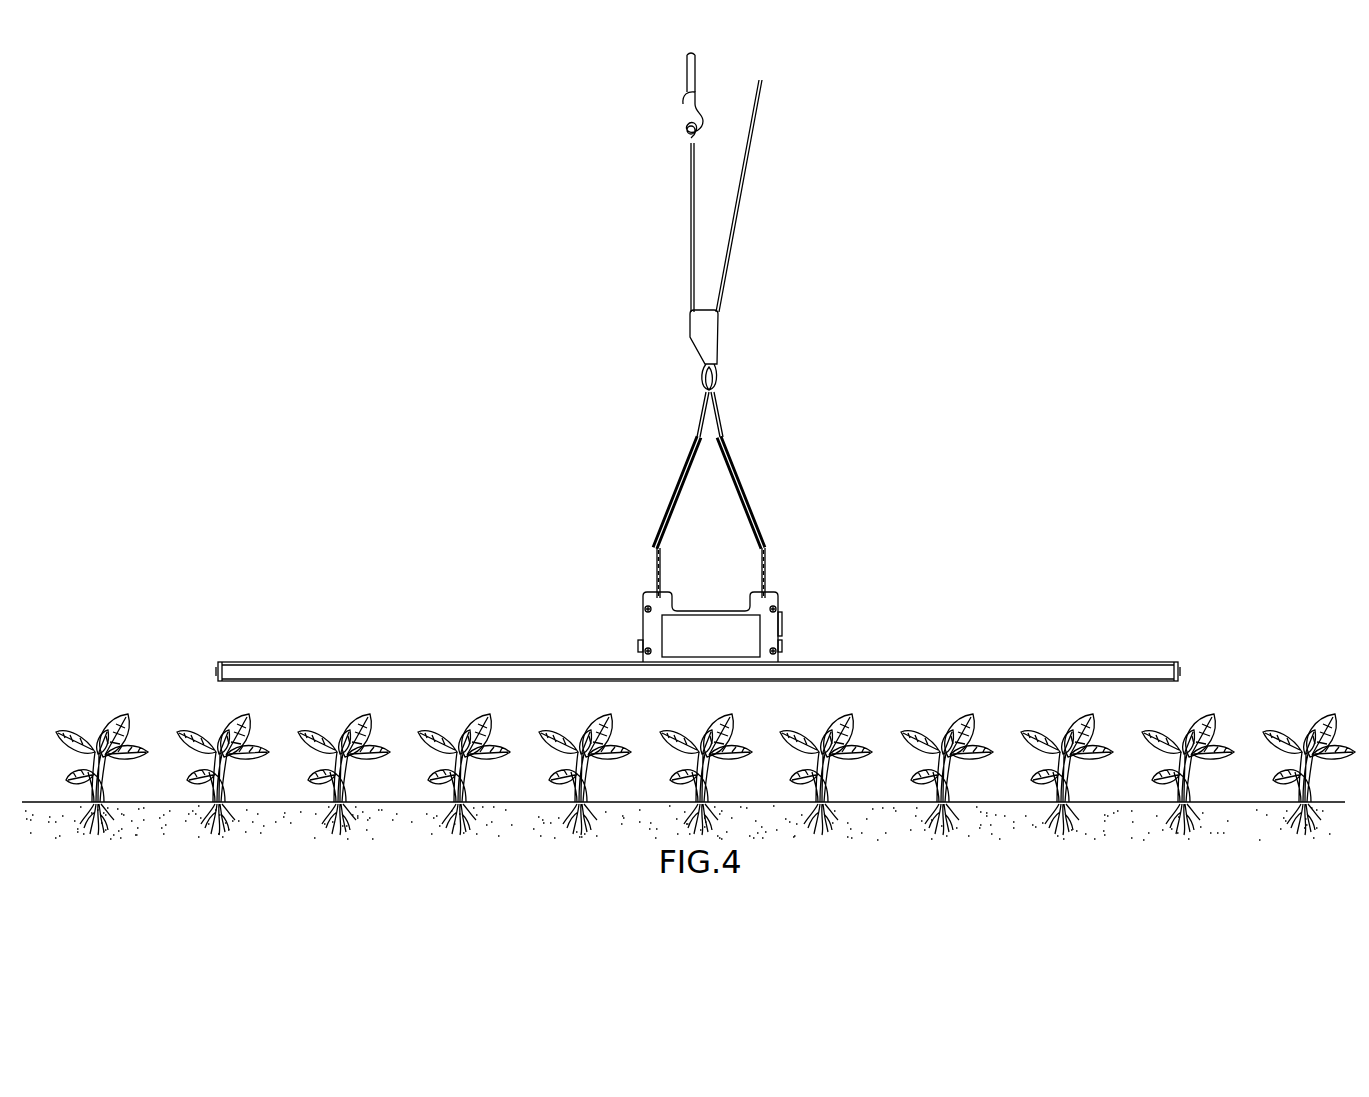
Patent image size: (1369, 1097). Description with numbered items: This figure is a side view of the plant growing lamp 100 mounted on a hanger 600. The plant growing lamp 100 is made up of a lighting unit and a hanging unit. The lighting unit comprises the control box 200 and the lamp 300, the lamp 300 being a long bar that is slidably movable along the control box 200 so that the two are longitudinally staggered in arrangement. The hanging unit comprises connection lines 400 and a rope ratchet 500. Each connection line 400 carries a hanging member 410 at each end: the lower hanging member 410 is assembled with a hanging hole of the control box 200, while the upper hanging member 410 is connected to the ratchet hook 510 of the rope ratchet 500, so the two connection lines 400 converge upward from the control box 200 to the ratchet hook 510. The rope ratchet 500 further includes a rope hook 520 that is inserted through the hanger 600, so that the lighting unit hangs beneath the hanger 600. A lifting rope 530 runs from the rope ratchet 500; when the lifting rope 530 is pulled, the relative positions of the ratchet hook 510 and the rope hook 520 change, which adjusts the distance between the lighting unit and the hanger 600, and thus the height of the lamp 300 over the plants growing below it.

The plant growing lamp 100 is at (703, 380).
The control box 200 is at (637, 625).
The lamp 300 is at (1085, 648).
The connection line 400 is at (717, 449).
The hanging member 410 is at (705, 407).
The rope ratchet 500 is at (739, 235).
The ratchet hook 510 is at (718, 373).
The rope hook 520 is at (680, 126).
The lifting rope 530 is at (732, 237).
The hanger 600 is at (688, 70).